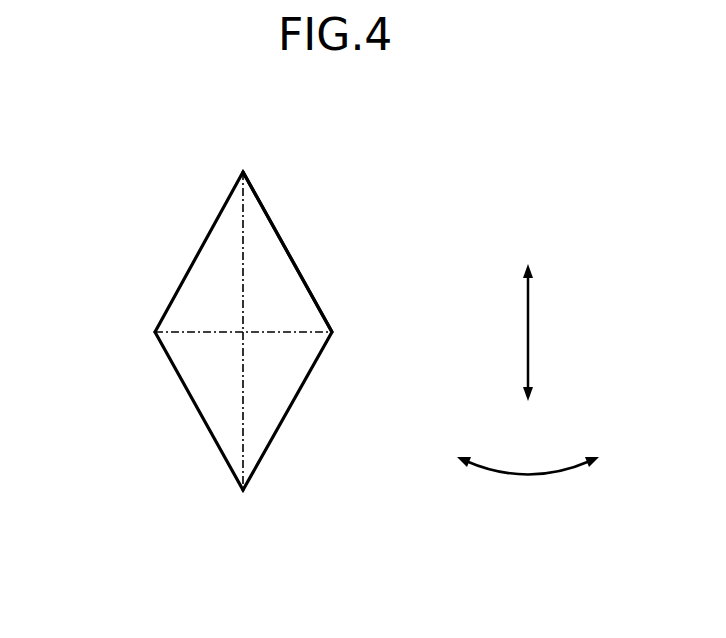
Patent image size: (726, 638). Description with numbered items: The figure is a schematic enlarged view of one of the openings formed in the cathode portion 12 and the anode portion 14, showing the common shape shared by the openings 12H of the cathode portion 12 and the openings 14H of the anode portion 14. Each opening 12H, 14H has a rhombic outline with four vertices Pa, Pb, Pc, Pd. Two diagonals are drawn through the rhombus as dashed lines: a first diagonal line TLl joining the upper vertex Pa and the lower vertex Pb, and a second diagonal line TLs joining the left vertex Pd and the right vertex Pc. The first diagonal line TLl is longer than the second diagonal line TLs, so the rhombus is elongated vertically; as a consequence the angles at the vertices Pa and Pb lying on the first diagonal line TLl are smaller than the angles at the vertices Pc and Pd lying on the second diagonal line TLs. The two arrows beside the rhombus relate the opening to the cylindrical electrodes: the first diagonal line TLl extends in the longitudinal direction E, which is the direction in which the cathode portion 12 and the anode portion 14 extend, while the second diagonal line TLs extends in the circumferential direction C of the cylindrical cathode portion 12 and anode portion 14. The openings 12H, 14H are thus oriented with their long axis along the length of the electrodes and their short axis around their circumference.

The cathode portion 12 is at (231, 338).
The anode portion 14 is at (90, 145).
The opening of the cathode portion 12H is at (323, 246).
The opening of the anode portion 14H is at (268, 214).
The first diagonal line TLl is at (240, 278).
The second diagonal line TLs is at (202, 338).
The vertex Pa is at (245, 165).
The vertex Pb is at (243, 504).
The vertex Pc is at (344, 333).
The vertex Pd is at (142, 333).
The longitudinal direction E is at (528, 328).
The circumferential direction C is at (538, 459).